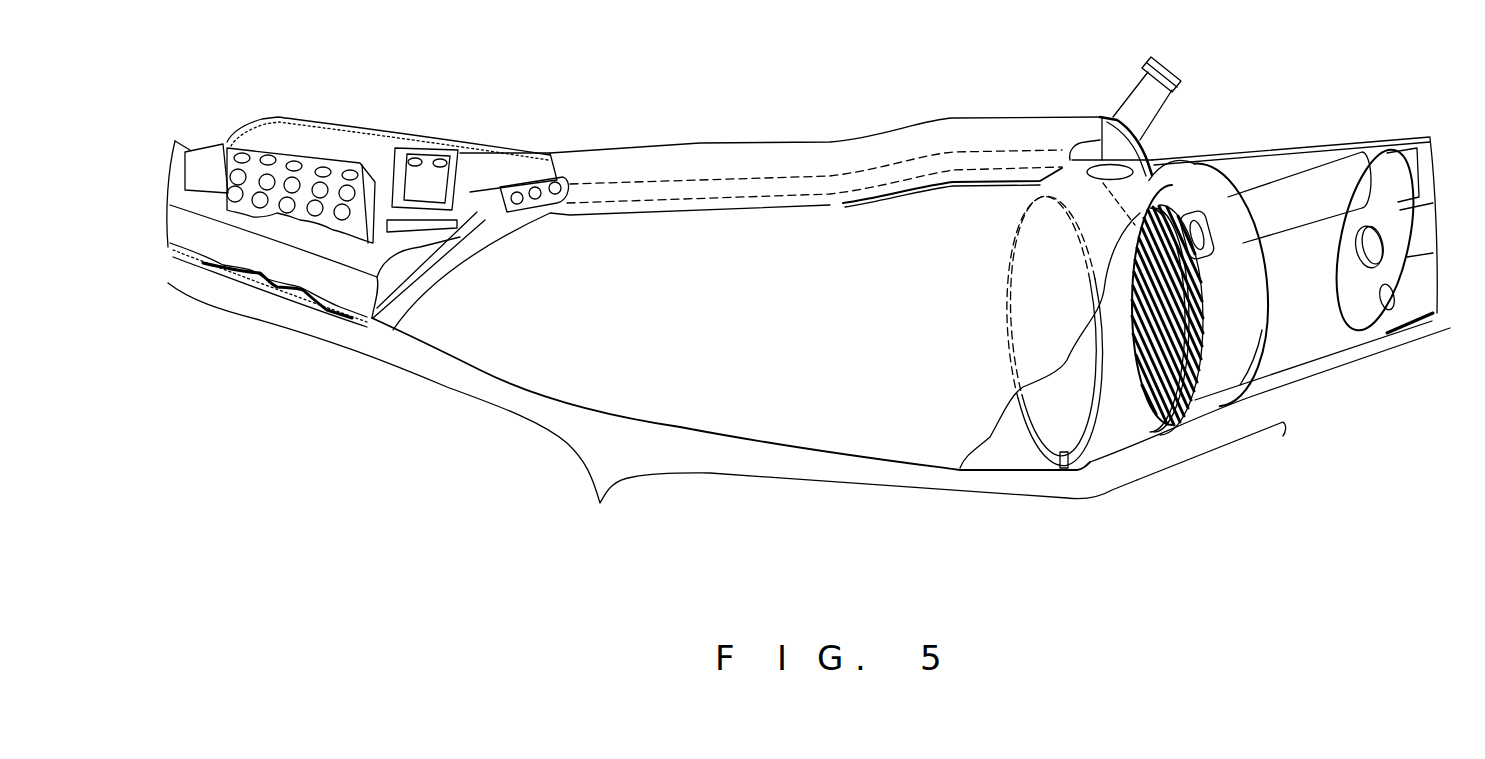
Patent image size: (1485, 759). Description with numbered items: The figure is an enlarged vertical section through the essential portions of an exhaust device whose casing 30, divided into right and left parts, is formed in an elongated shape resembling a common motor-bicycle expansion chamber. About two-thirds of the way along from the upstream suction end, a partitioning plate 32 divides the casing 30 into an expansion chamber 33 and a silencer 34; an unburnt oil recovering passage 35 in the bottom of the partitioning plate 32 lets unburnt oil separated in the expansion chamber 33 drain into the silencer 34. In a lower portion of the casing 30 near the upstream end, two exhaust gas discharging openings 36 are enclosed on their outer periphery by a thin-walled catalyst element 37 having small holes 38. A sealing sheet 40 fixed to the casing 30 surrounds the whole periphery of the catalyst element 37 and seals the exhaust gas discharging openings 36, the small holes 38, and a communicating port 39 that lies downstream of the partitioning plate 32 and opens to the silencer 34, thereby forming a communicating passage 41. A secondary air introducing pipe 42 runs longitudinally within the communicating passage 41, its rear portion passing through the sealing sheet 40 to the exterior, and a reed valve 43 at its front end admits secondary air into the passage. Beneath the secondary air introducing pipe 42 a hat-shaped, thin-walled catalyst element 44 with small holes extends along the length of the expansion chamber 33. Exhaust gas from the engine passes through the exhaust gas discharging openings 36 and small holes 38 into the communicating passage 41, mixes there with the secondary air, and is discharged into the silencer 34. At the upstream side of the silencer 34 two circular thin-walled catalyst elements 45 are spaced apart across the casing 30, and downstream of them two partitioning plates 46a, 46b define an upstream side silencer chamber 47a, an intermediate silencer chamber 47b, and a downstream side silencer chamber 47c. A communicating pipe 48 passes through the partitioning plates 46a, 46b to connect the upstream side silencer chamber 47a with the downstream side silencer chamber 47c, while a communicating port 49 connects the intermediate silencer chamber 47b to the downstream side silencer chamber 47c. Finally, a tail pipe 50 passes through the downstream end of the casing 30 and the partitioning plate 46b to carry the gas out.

The casing 30 is at (1252, 130).
The partitioning plate 32 is at (1123, 413).
The expansion chamber 33 is at (652, 416).
The silencer 34 is at (1270, 396).
The unburnt oil recovering passage 35 is at (1063, 457).
The exhaust gas discharging openings 36 is at (268, 283).
The catalyst element 37 is at (257, 153).
The small holes 38 is at (272, 160).
The communicating port 39 is at (1102, 160).
The sealing sheet 40 is at (393, 128).
The communicating passage 41 is at (1070, 150).
The secondary air introducing pipe 42 is at (497, 170).
The reed valve 43 is at (427, 177).
The catalyst element 44 is at (547, 180).
The catalyst elements 45 is at (1198, 422).
The partitioning plate 46a is at (1260, 327).
The partitioning plate 46b is at (1364, 298).
The upstream side silencer chamber 47a is at (1213, 282).
The intermediate silencer chamber 47b is at (1313, 329).
The downstream side silencer chamber 47c is at (1417, 150).
The communicating pipe 48 is at (1307, 193).
The communicating port 49 is at (1387, 313).
The tail pipe 50 is at (1420, 233).